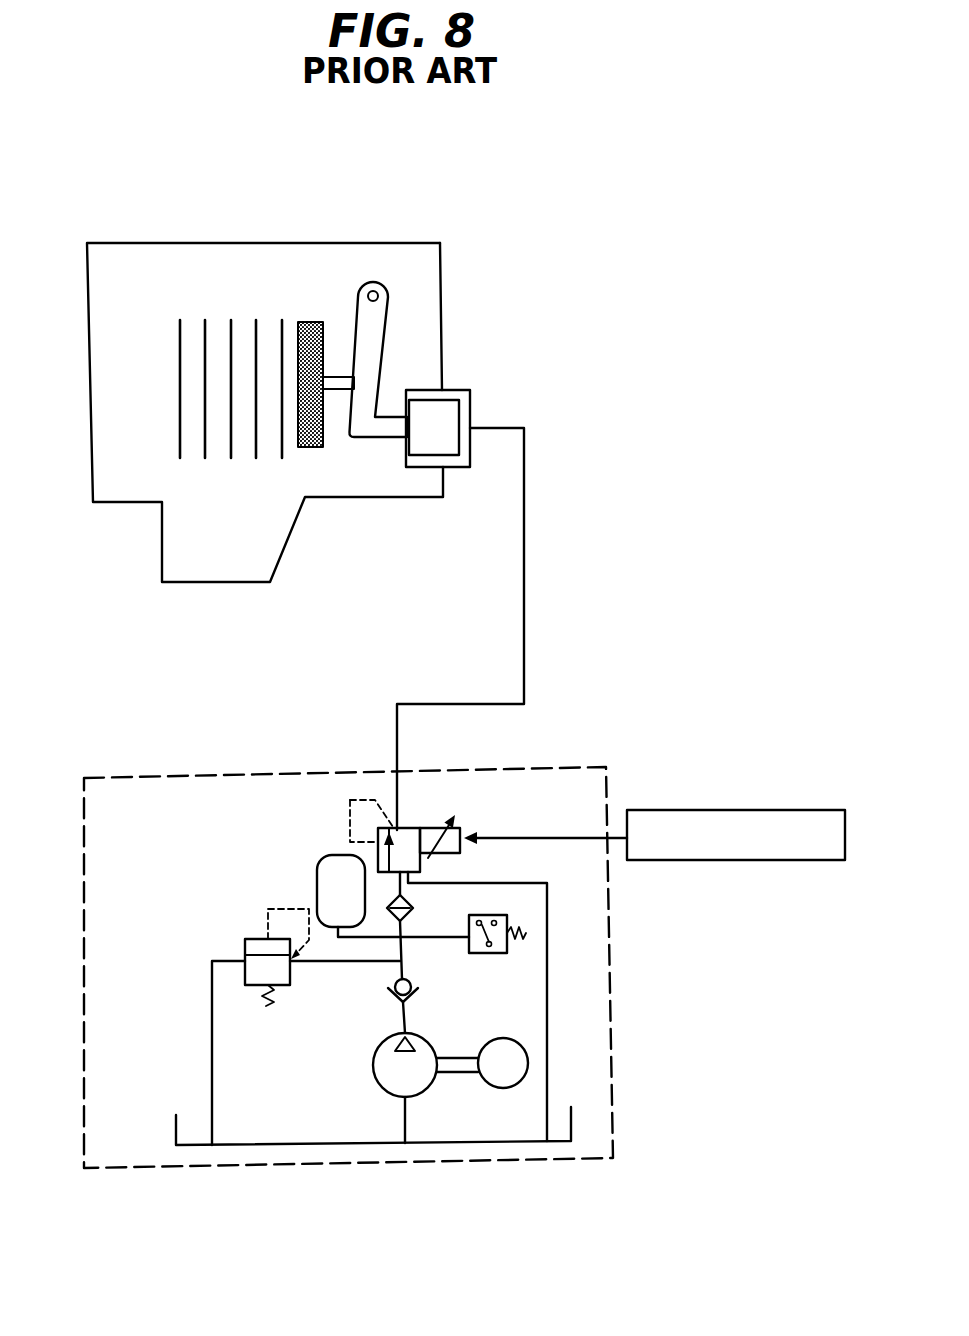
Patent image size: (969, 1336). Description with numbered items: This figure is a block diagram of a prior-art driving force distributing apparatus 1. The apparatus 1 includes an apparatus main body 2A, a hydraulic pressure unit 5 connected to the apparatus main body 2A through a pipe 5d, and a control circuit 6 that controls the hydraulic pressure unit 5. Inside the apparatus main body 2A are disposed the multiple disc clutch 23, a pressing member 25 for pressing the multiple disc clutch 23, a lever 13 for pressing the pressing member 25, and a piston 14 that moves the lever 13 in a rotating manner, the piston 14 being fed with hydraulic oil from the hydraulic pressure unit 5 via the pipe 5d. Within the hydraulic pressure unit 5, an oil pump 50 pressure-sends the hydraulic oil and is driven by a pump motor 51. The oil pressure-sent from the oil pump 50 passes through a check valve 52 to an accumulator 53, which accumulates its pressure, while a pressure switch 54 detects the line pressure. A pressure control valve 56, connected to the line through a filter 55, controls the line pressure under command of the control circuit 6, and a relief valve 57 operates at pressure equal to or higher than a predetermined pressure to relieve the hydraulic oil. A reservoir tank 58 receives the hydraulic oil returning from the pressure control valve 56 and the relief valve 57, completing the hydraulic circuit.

The driving force distributing apparatus 1 is at (449, 229).
The apparatus main body 2A is at (380, 243).
The multiple disc clutch 23 is at (253, 338).
The pressing member 25 is at (307, 323).
The lever 13 is at (377, 322).
The piston 14 is at (448, 415).
The hydraulic line 5d is at (526, 627).
The hydraulic pressure unit 5 is at (127, 778).
The control circuit 6 is at (792, 808).
The accumulator 53 is at (333, 855).
The pressure control valve 56 is at (428, 828).
The filter 55 is at (413, 908).
The pressure switch 54 is at (507, 947).
The relief valve 57 is at (245, 948).
The check valve 52 is at (420, 993).
The pump motor 51 is at (528, 1062).
The oil pump 50 is at (413, 1097).
The reservoir tank 58 is at (563, 1143).